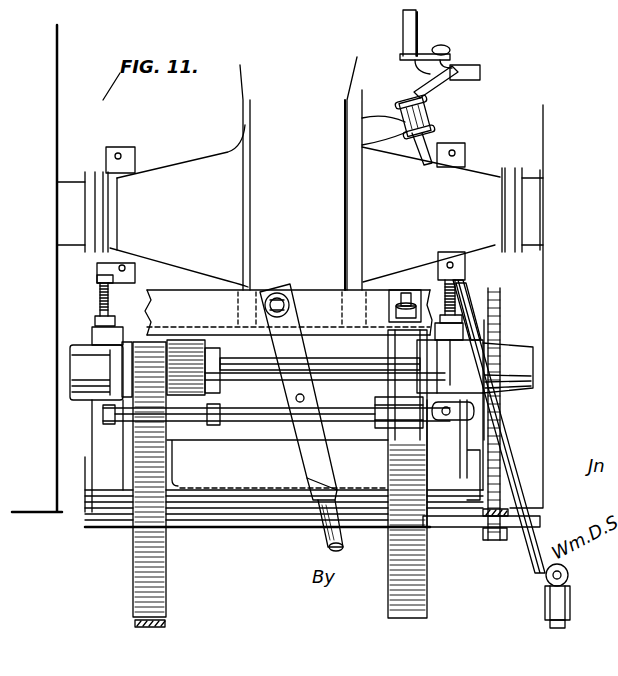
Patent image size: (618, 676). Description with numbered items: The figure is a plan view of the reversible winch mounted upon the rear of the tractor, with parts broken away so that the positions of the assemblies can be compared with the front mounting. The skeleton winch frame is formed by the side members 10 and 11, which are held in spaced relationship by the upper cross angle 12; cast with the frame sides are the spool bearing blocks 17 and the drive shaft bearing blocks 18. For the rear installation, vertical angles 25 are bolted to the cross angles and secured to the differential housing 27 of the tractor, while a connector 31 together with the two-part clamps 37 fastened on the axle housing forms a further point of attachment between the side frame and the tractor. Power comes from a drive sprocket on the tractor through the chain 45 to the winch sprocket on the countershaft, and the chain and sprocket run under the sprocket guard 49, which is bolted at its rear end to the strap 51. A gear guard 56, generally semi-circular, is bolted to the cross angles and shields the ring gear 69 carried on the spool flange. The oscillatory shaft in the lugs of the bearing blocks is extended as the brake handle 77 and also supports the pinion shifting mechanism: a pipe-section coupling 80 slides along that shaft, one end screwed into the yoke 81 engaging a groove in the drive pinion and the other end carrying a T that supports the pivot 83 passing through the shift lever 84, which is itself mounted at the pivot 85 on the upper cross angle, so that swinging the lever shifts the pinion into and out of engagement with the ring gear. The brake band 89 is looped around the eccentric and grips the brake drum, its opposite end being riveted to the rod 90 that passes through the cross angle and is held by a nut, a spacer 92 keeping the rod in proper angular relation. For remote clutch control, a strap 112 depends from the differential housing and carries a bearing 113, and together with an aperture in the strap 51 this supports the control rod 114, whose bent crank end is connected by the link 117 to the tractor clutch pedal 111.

The side member 10 is at (453, 442).
The side member 11 is at (93, 423).
The upper cross angle 12 is at (165, 302).
The spool bearing block 17 is at (95, 523).
The drive shaft bearing block 18 is at (72, 358).
The vertical angle 25 is at (240, 280).
The differential housing 27 is at (265, 123).
The connector 31 is at (95, 300).
The clamp 37 is at (130, 165).
The chain 45 is at (500, 295).
The sprocket guard 49 is at (483, 523).
The strap 51 is at (530, 520).
The gear guard 56 is at (135, 624).
The ring gear 69 is at (143, 552).
The brake handle 77 is at (440, 482).
The coupling 80 is at (245, 425).
The yoke 81 is at (207, 432).
The pivot 83 is at (301, 394).
The shift lever 84 is at (305, 450).
The pivot 85 is at (278, 293).
The brake band 89 is at (398, 527).
The rod 90 is at (392, 298).
The spacer 92 is at (405, 298).
The tractor clutch pedal 111 is at (418, 29).
The strap 112 is at (363, 109).
The bearing 113 is at (425, 116).
The control rod 114 is at (466, 294).
The link 117 is at (400, 58).